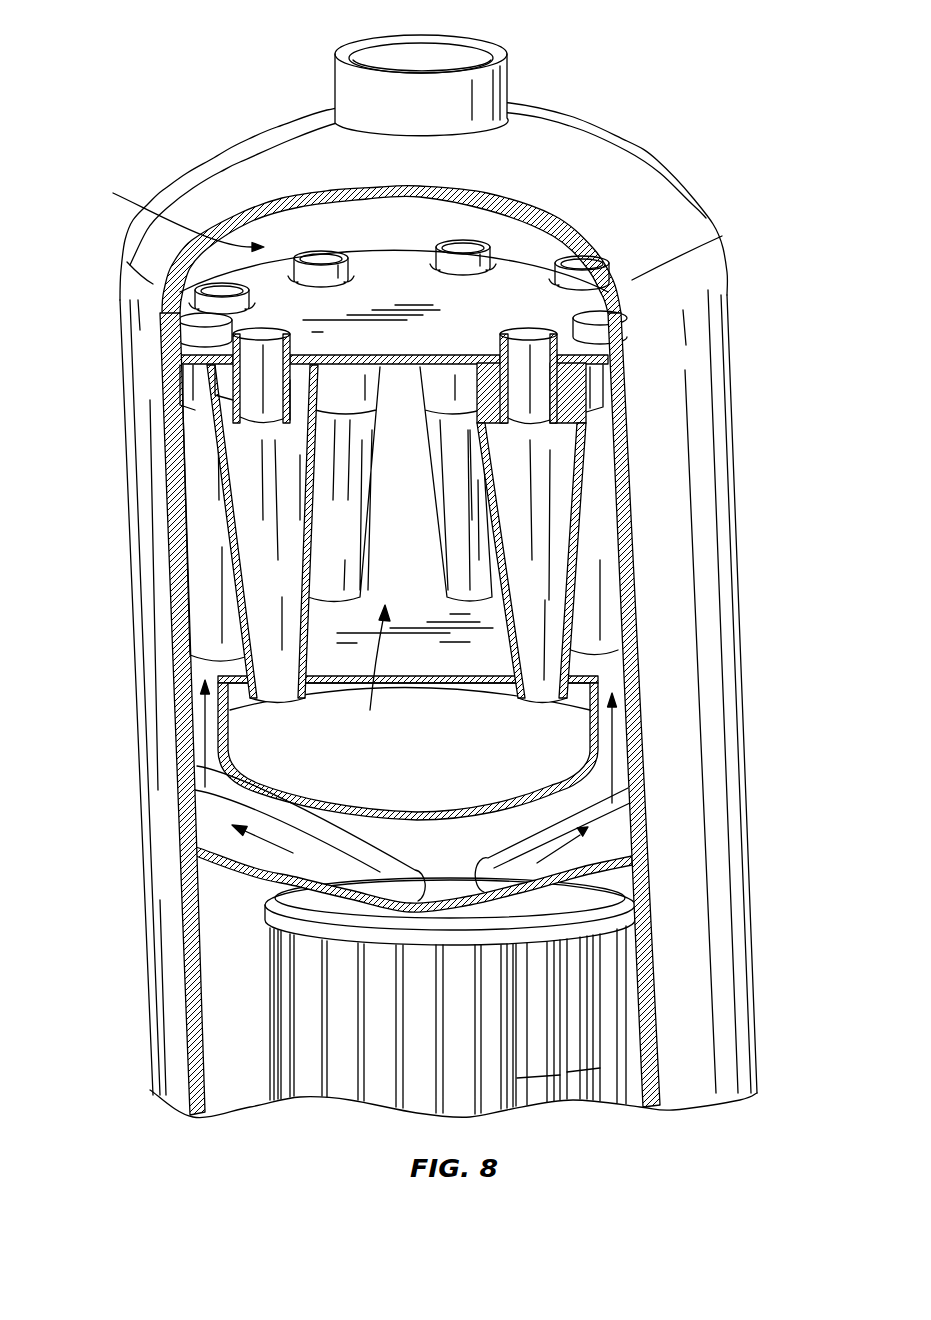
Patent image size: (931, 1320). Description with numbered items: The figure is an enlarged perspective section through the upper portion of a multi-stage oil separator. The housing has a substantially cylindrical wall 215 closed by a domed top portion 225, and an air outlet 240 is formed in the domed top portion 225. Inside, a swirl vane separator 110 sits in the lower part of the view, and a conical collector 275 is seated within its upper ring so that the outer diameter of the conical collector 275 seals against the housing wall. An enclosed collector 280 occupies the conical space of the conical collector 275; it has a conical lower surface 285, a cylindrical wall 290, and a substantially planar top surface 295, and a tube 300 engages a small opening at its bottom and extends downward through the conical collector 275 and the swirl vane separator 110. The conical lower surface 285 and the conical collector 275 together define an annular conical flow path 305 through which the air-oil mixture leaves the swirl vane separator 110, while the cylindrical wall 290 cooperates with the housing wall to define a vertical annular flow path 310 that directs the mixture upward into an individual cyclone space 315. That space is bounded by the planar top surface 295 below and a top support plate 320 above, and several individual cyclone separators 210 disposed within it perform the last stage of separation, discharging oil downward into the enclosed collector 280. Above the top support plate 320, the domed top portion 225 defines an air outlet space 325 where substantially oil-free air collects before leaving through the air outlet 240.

The swirl vane separator 110 is at (307, 1068).
The individual cyclone separators 210 is at (455, 380).
The cylindrical wall 215 is at (158, 1003).
The domed top portion 225 is at (223, 172).
The air outlet 240 is at (510, 77).
The conical collector 275 is at (655, 883).
The enclosed collector 280 is at (240, 787).
The conical lower surface 285 is at (603, 817).
The cylindrical wall 290 is at (615, 678).
The planar top surface 295 is at (468, 657).
The tube 300 is at (415, 894).
The annular conical flow path 305 is at (268, 846).
The vertical annular flow path 310 is at (200, 728).
The individual cyclone space 315 is at (373, 672).
The top support plate 320 is at (414, 293).
The air outlet space 325 is at (171, 211).